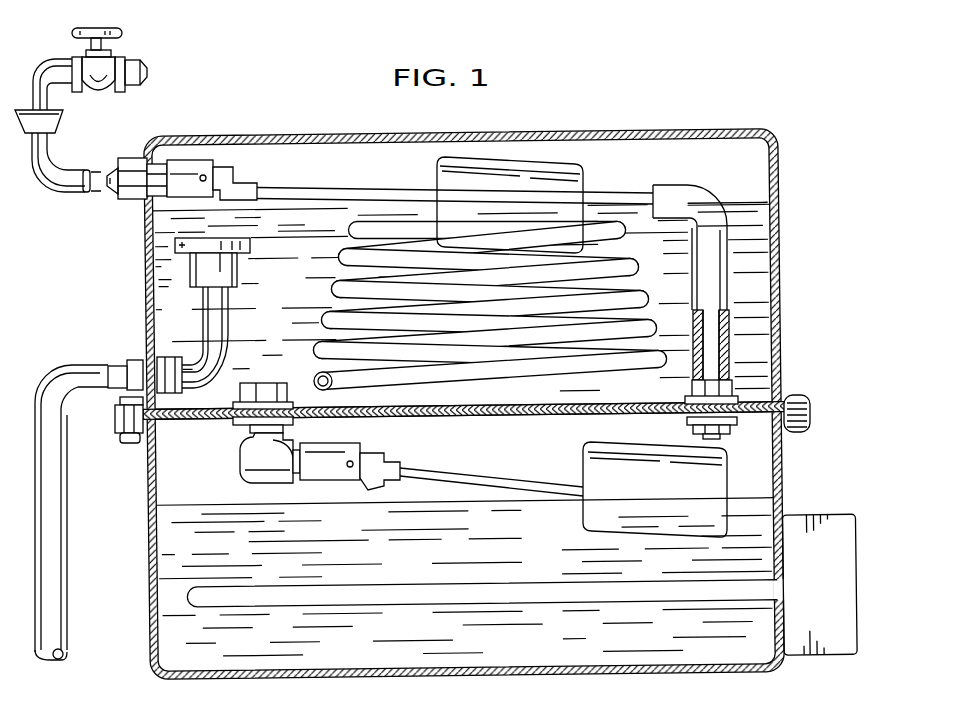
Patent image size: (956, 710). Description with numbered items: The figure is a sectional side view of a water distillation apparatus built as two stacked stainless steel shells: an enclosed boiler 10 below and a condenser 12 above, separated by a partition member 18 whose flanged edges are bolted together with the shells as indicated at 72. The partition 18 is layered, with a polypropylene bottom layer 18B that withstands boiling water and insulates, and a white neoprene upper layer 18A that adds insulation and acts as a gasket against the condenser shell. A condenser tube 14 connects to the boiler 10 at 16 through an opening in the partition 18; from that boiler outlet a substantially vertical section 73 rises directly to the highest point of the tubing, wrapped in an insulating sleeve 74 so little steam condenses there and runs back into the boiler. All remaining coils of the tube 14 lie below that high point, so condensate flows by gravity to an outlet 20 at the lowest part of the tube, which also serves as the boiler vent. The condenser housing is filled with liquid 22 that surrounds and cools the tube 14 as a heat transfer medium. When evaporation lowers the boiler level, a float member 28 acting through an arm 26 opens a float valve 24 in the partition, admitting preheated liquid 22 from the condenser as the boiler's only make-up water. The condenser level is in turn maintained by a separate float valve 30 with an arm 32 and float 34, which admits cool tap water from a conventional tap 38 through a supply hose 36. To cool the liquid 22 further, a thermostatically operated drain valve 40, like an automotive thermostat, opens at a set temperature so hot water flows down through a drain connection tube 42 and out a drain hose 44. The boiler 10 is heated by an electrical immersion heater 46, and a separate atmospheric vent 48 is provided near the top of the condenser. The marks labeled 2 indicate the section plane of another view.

The boiler 10 is at (480, 404).
The condenser 12 is at (782, 258).
The condenser tube 14 is at (477, 241).
The connection 16 is at (688, 417).
The partition member 18 is at (472, 414).
The upper layer 18A is at (583, 404).
The bottom layer 18B is at (523, 420).
The outlet 20 is at (317, 375).
The liquid 22 is at (747, 213).
The float valve 24 is at (250, 459).
The arm 26 is at (457, 477).
The float member 28 is at (592, 468).
The float valve 30 is at (190, 160).
The arm 32 is at (285, 191).
The float 34 is at (507, 170).
The supply hose 36 is at (47, 178).
The tap 38 is at (100, 73).
The thermostatically operated drain valve 40 is at (173, 248).
The drain connection tube 42 is at (210, 322).
The drain hose 44 is at (58, 383).
The electrical immersion heater 46 is at (630, 596).
The atmospheric vent 48 is at (173, 157).
The bolted flanges 72 is at (812, 389).
The vertical section 73 is at (711, 360).
The insulating sleeve 74 is at (730, 347).
The section line of FIG. 2 is at (137, 146).